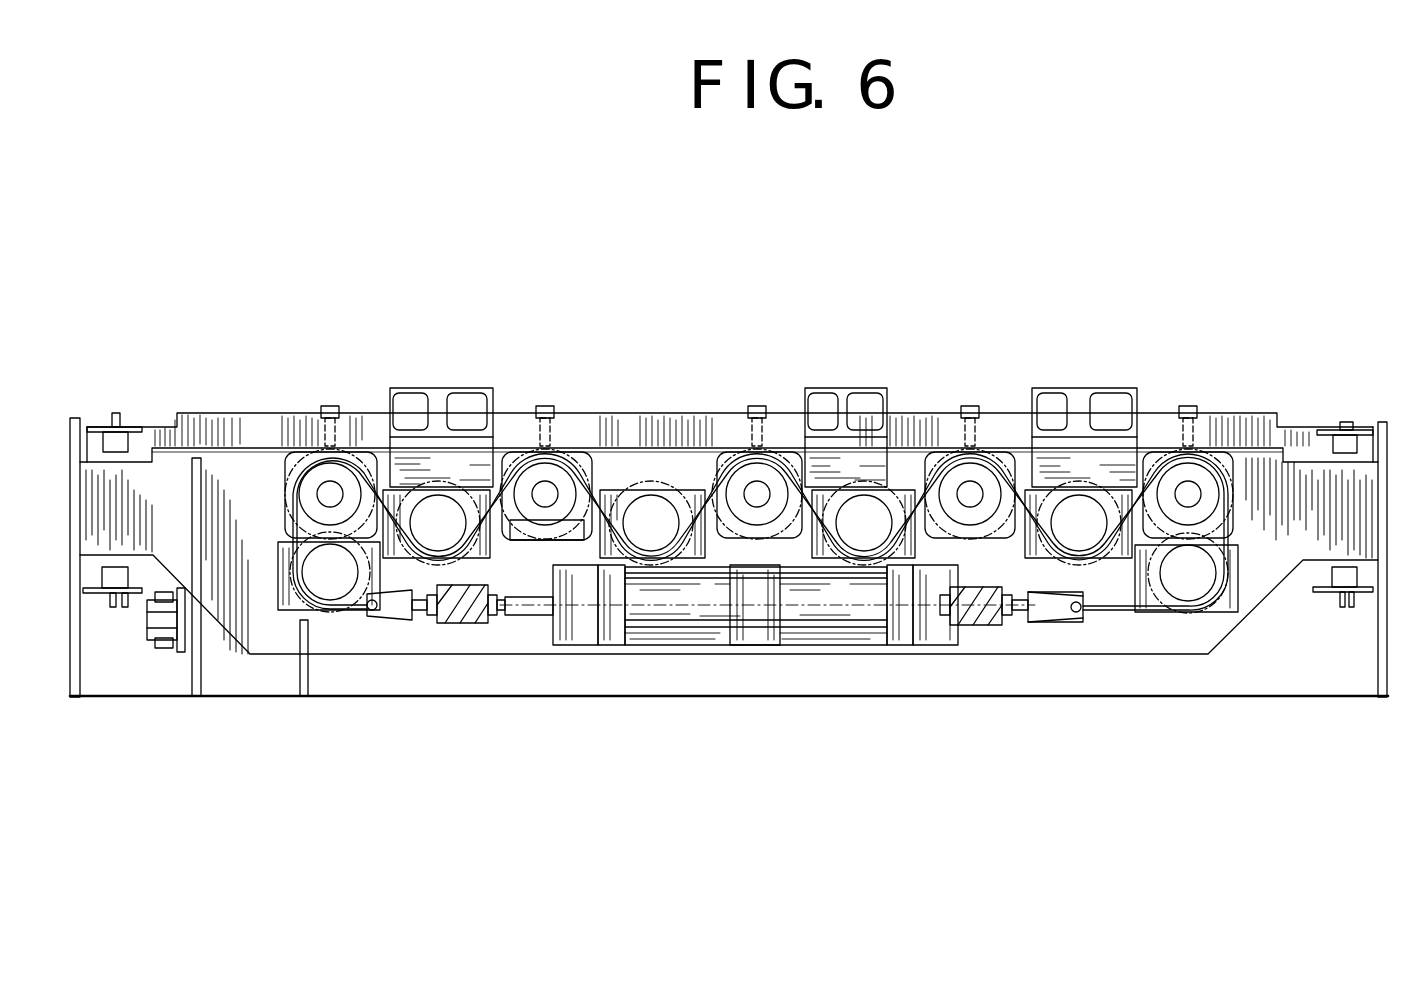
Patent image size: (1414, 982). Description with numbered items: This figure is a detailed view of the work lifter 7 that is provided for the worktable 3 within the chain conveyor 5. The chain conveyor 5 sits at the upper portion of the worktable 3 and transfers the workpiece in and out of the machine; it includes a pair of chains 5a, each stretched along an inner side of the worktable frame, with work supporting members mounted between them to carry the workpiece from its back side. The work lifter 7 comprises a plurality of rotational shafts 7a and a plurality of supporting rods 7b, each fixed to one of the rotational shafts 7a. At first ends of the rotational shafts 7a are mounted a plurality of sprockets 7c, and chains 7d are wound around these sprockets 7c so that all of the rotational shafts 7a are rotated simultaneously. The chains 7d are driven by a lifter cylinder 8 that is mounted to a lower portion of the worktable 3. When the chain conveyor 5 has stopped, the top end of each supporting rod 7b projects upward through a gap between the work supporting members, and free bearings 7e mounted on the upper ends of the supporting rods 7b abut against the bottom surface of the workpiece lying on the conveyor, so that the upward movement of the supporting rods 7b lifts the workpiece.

The worktable 3 is at (278, 688).
The chain conveyor 5 is at (1388, 548).
The chains 5a is at (1367, 443).
The work lifter 7 is at (552, 448).
The rotational shafts 7a is at (550, 490).
The supporting rods 7b is at (535, 430).
The sprockets 7c is at (535, 528).
The chains 7d is at (603, 506).
The free bearings 7e is at (547, 406).
The lifter cylinder 8 is at (692, 624).